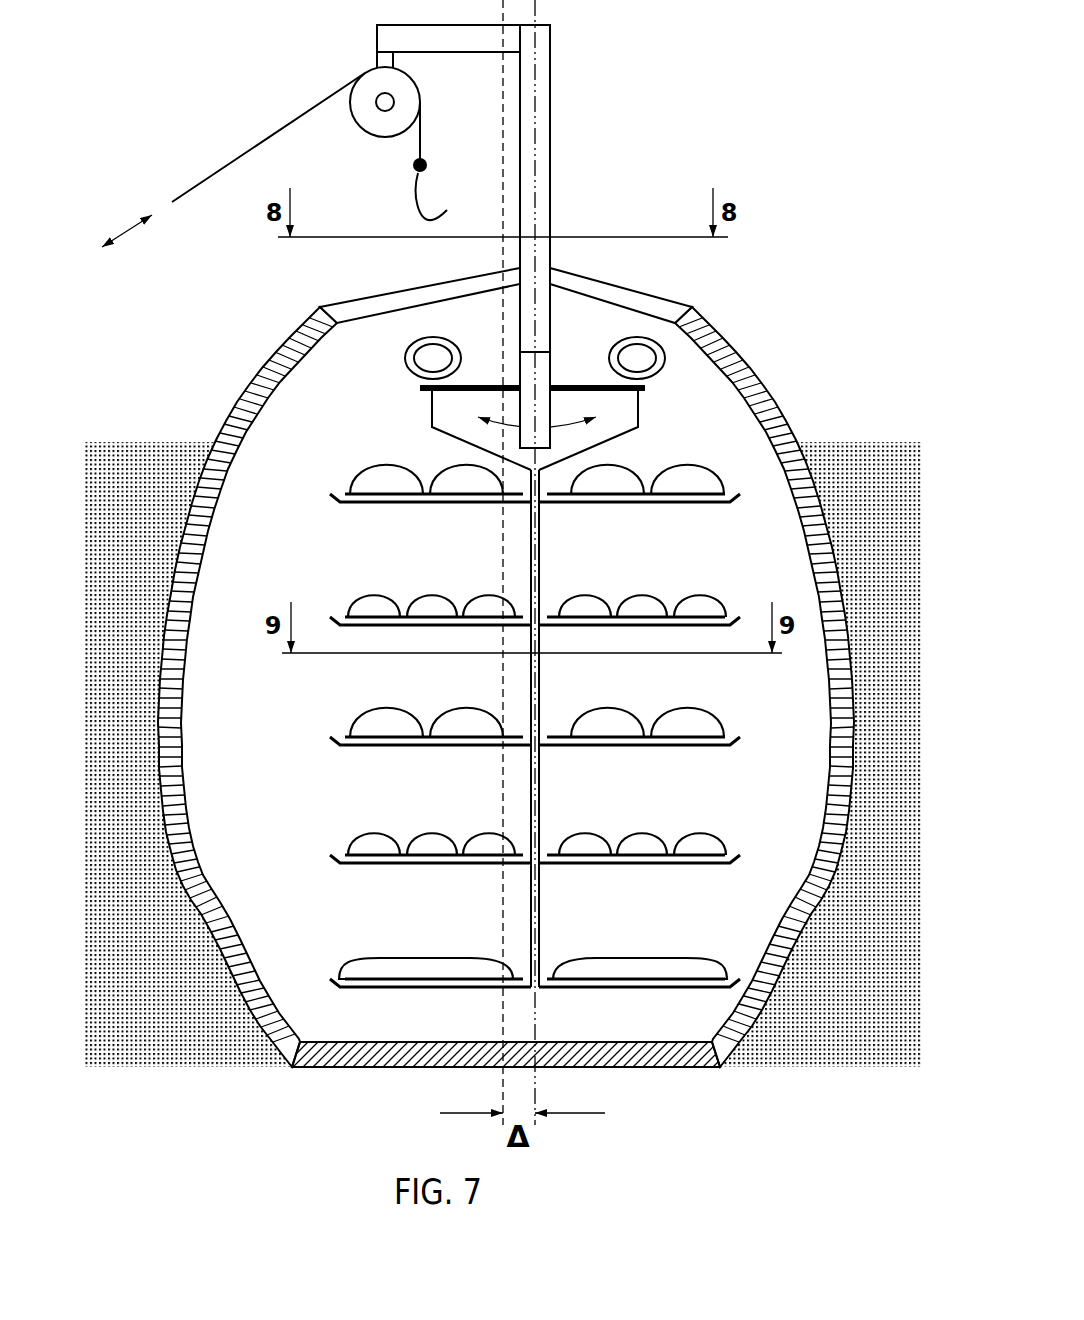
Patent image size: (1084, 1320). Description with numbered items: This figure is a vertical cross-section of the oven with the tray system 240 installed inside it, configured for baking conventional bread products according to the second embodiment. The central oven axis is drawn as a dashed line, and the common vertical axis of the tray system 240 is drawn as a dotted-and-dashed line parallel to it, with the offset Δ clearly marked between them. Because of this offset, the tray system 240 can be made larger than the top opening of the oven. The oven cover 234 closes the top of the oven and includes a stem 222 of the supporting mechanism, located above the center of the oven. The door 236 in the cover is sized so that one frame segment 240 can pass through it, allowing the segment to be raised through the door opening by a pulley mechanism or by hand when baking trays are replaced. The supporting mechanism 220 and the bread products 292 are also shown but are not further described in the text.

The hoist assembly 220 is at (562, 134).
The stem 222 is at (550, 192).
The oven cover 234 is at (673, 298).
The door 236 is at (337, 300).
The tray system 240 is at (392, 447).
The product loaves 292 is at (622, 958).